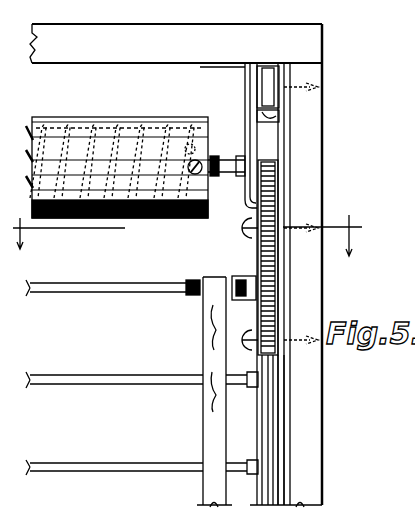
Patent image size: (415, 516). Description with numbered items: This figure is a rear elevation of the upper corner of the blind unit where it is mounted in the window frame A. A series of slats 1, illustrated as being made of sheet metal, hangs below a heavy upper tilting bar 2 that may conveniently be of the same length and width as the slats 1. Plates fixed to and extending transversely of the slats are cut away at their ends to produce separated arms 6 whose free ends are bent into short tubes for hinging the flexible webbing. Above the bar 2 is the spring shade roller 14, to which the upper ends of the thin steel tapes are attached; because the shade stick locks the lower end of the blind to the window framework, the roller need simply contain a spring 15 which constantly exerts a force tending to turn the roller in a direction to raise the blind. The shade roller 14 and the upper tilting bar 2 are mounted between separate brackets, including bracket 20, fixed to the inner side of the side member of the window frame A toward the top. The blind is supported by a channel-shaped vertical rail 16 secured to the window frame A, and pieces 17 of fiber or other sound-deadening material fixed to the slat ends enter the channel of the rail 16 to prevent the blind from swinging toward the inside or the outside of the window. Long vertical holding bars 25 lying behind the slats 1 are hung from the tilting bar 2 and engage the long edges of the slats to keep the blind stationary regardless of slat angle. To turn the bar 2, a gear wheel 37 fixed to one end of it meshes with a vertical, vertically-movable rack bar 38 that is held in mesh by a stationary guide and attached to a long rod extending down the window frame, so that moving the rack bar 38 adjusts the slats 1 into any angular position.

The slats 1 is at (108, 379).
The upper tilting bar 2 is at (80, 288).
The arms 6 is at (187, 226).
The spring shade roller 14 is at (73, 130).
The spring 15 is at (188, 126).
The vertical rails 16 is at (265, 423).
The sound-deadening pieces 17 is at (262, 460).
The bracket 20 is at (270, 124).
The rear holding bars 25 is at (210, 445).
The gear wheel 37 is at (262, 240).
The rack bar 38 is at (272, 165).
The window frame A is at (312, 461).